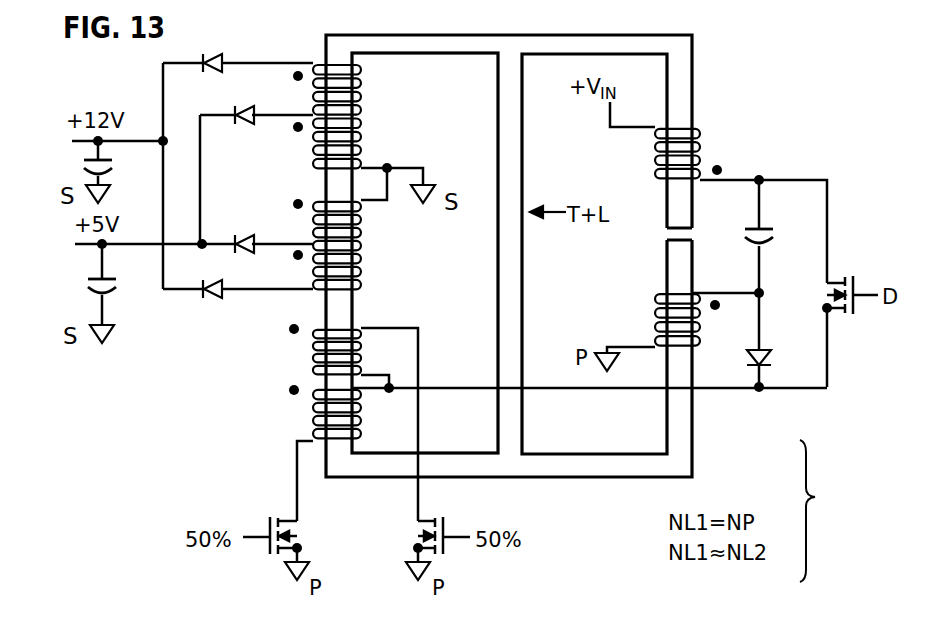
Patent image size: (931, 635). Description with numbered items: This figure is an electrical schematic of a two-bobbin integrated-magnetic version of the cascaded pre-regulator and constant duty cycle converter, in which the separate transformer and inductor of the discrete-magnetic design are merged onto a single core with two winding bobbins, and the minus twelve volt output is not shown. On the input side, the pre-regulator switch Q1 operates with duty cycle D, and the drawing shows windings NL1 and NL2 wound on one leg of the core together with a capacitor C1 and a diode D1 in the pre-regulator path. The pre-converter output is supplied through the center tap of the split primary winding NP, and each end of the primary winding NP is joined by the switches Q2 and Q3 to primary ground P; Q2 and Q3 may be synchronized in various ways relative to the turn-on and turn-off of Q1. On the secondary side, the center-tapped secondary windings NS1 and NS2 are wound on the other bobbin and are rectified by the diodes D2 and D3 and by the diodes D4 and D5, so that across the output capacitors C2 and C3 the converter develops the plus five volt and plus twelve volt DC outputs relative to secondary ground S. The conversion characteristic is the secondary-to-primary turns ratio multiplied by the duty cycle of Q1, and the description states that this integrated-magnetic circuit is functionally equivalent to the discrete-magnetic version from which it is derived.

The diode D1 is at (777, 357).
The diode D2 is at (252, 227).
The diode D3 is at (252, 130).
The diode D4 is at (232, 278).
The diode D5 is at (232, 73).
The capacitor C1 is at (766, 238).
The output capacitor C2 is at (73, 280).
The output capacitor C3 is at (67, 158).
The pre-regulator switch Q1 is at (852, 279).
The switch Q2 is at (449, 522).
The switch Q3 is at (308, 532).
The secondary winding NS1 is at (369, 116).
The secondary winding NS2 is at (369, 245).
The primary winding NP is at (314, 384).
The winding NL1 is at (651, 153).
The winding NL2 is at (648, 320).